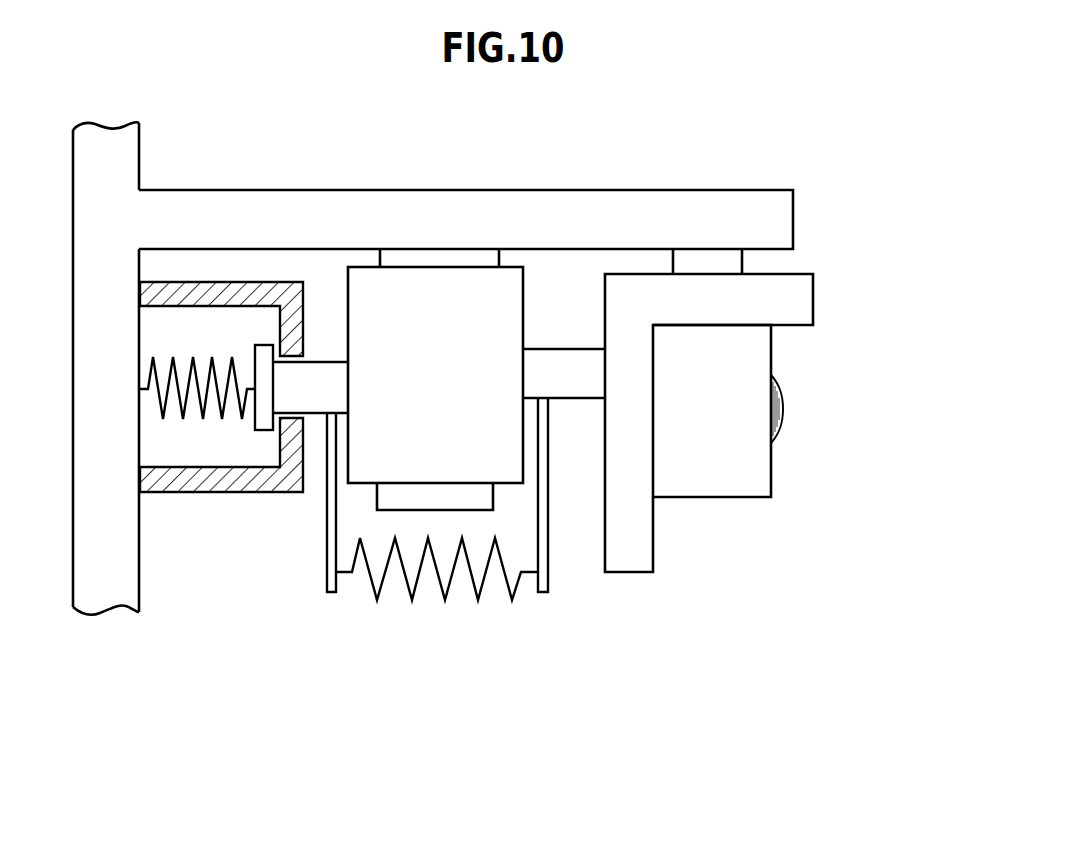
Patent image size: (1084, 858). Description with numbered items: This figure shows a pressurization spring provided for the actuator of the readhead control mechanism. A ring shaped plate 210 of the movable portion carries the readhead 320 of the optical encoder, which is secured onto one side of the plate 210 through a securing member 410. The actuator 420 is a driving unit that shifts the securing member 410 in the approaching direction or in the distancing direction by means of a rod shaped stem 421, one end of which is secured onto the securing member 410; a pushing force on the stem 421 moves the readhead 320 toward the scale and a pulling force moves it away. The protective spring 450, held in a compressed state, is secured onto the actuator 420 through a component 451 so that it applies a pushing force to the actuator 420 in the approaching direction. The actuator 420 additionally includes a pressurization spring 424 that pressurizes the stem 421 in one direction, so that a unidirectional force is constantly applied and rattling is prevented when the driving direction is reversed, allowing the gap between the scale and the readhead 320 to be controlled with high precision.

The plate 210 is at (663, 190).
The readhead 320 is at (772, 473).
The securing member 410 is at (813, 297).
The actuator 420 is at (520, 263).
The stem 421 is at (577, 349).
The pressurization spring 424 is at (445, 600).
The protective spring 450 is at (193, 357).
The component 451 is at (330, 358).